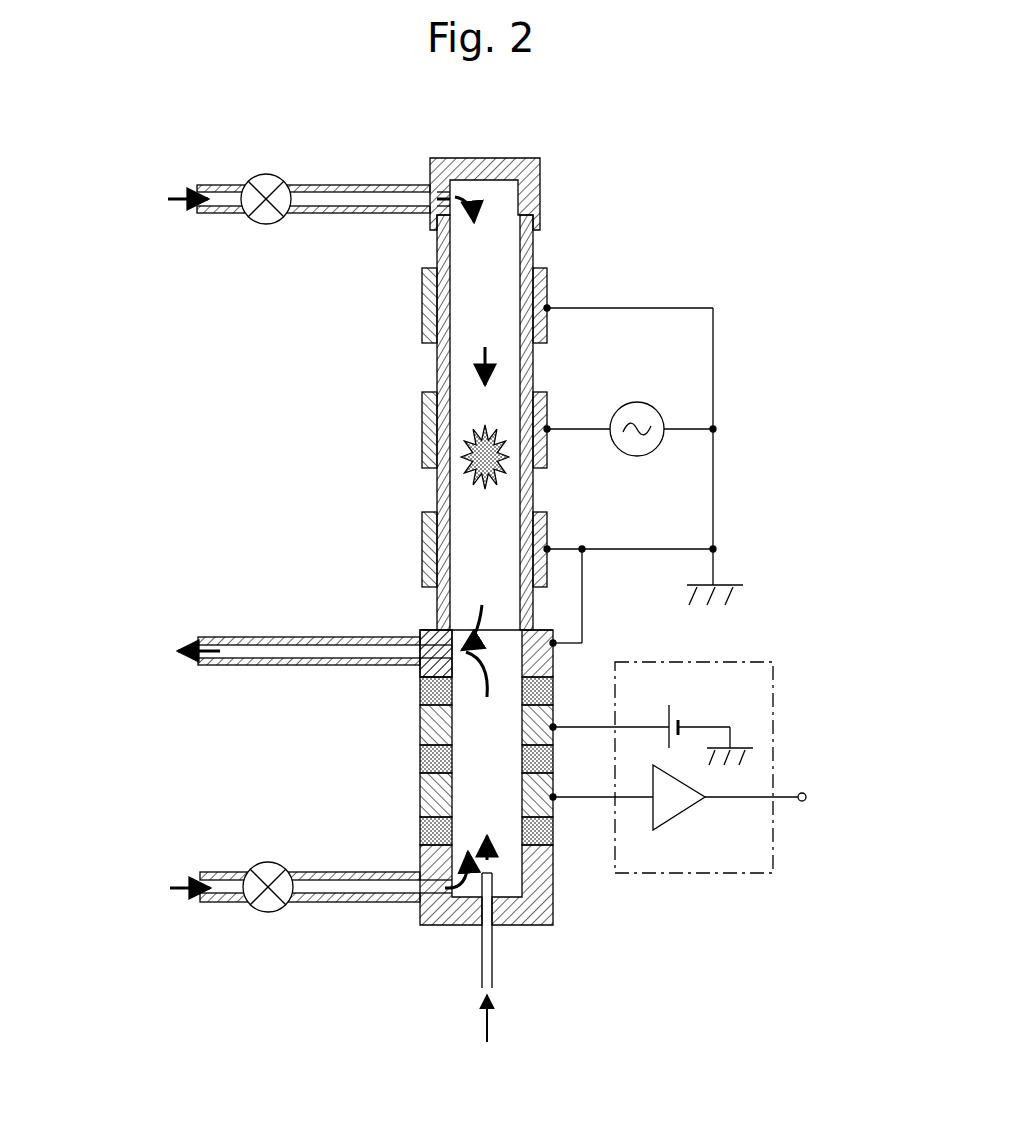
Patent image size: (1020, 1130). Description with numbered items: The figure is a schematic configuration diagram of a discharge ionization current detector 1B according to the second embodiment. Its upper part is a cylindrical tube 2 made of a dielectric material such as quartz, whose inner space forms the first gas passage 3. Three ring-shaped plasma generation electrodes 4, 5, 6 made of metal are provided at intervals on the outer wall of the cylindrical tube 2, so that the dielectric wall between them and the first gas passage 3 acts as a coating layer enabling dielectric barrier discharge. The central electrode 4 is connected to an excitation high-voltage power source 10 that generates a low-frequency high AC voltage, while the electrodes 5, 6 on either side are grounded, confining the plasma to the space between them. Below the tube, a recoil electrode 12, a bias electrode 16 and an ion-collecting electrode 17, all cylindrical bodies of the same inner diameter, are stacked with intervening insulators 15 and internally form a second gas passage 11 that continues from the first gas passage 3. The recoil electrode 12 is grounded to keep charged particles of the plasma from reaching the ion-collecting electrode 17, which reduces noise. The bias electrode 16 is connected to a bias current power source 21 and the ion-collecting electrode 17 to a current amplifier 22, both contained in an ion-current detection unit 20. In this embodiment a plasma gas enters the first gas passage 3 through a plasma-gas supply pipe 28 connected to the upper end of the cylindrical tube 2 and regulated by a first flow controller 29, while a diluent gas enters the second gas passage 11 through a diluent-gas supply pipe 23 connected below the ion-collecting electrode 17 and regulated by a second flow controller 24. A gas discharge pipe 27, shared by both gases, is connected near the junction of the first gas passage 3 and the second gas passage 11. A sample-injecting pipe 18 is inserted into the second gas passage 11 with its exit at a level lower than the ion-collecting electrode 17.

The discharge ionization current detector 1B is at (164, 114).
The cylindrical tube 2 is at (534, 254).
The first gas passage 3 is at (465, 378).
The plasma generation electrode 4 is at (424, 416).
The plasma generation electrode 5 is at (424, 532).
The plasma generation electrode 6 is at (424, 289).
The excitation high-voltage power source 10 is at (641, 400).
The second gas passage 11 is at (512, 706).
The recoil electrode 12 is at (420, 632).
The insulator 15 is at (420, 695).
The bias electrode 16 is at (554, 723).
The ion-collecting electrode 17 is at (554, 786).
The sample-injecting pipe 18 is at (493, 882).
The ion-current detection unit 20 is at (774, 711).
The bias current power source 21 is at (684, 721).
The current amplifier 22 is at (680, 812).
The diluent-gas supply pipe 23 is at (325, 873).
The second flow controller 24 is at (266, 861).
The gas discharge pipe 27 is at (246, 637).
The plasma-gas supply pipe 28 is at (358, 185).
The first flow controller 29 is at (260, 173).